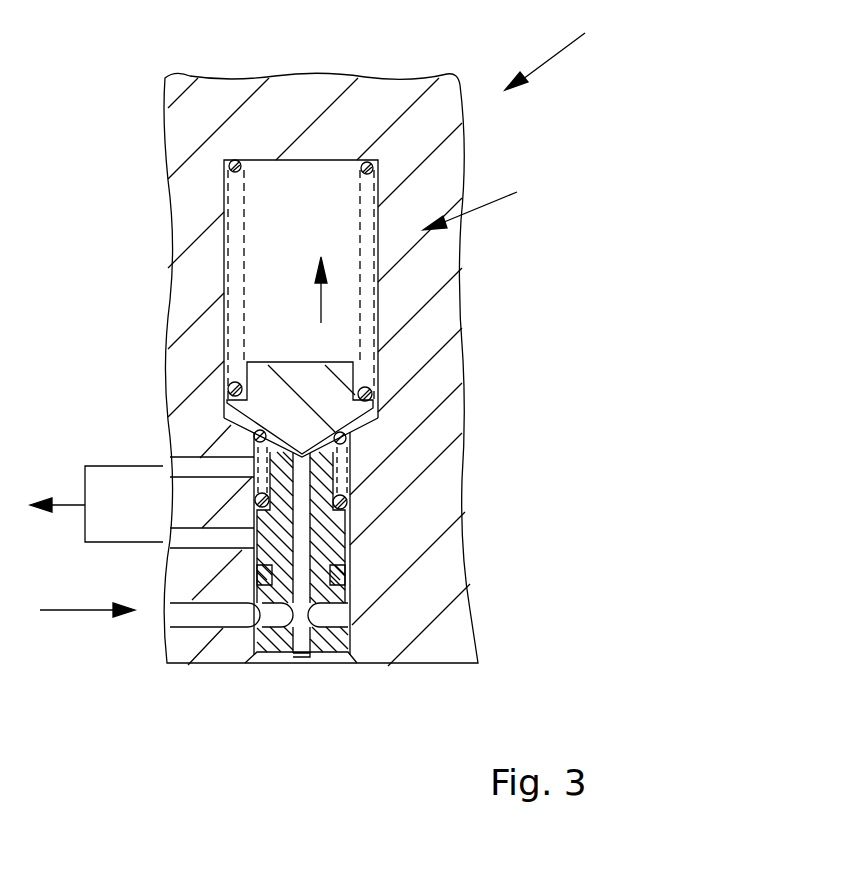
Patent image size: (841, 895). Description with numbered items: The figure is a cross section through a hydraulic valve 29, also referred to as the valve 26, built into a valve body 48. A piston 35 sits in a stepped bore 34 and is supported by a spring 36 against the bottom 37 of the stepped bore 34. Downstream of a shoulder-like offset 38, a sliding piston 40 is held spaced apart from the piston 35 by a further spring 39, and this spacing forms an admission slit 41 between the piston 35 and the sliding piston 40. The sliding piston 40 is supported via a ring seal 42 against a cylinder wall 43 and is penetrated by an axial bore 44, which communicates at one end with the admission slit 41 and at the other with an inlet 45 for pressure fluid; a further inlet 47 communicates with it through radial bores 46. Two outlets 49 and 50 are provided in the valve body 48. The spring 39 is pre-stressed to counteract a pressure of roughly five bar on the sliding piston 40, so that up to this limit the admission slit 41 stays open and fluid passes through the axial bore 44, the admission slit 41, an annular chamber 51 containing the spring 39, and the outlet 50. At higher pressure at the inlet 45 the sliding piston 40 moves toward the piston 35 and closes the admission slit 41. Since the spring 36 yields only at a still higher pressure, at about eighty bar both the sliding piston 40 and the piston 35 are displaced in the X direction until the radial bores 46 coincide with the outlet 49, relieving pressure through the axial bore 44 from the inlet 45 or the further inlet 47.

The valve 26 is at (566, 49).
The hydraulic valve 29 is at (490, 204).
The stepped bore 34 is at (380, 410).
The piston 35 is at (328, 378).
The spring 36 is at (363, 207).
The bottom 37 is at (360, 160).
The shoulder-like offset 38 is at (363, 425).
The further spring 39 is at (347, 492).
The sliding piston 40 is at (337, 552).
The admission slit 41 is at (257, 433).
The ring seal 42 is at (346, 582).
The cylinder wall 43 is at (347, 597).
The axial bore 44 is at (303, 535).
The inlet 45 is at (323, 663).
The radial bores 46 is at (283, 618).
The further inlet 47 is at (208, 618).
The valve body 48 is at (172, 123).
The outlet 49 is at (182, 543).
The outlet 50 is at (187, 463).
The annular chamber 51 is at (255, 492).